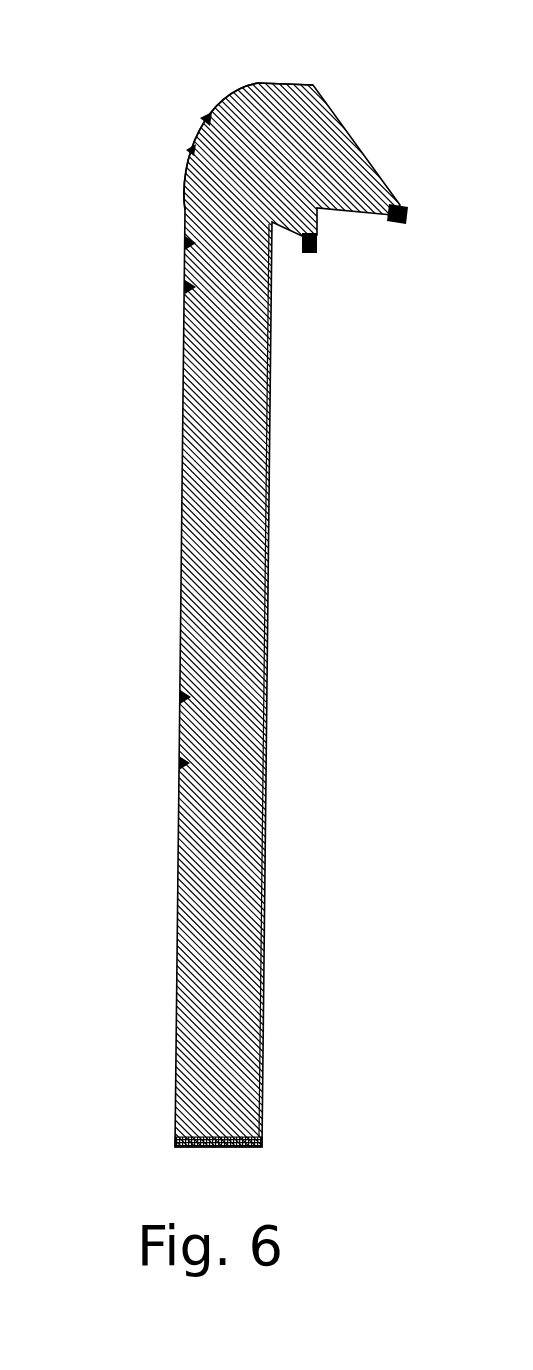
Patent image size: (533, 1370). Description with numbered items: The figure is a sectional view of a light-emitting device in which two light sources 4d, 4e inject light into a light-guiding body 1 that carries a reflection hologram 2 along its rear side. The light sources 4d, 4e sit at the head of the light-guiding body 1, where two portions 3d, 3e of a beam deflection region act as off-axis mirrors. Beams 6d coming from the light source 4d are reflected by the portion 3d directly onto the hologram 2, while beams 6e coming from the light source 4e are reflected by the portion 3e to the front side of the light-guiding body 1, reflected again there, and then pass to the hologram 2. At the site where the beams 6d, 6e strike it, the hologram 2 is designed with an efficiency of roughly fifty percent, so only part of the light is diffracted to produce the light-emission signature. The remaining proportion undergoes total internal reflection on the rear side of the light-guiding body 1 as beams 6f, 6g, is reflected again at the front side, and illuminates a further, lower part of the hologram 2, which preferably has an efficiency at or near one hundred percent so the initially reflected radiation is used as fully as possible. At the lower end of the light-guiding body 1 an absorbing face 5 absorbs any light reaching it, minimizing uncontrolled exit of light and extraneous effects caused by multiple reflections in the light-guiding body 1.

The light-guiding body 1 is at (165, 551).
The reflection hologram 2 is at (285, 668).
The portion of the beam deflection region 3d is at (178, 115).
The portion of the beam deflection region 3e is at (276, 60).
The light source 4d is at (410, 248).
The light source 4e is at (340, 248).
The absorbing face 5 is at (195, 1147).
The beams 6d is at (185, 243).
The beams 6e is at (172, 287).
The beams 6f is at (179, 698).
The beams 6g is at (166, 763).